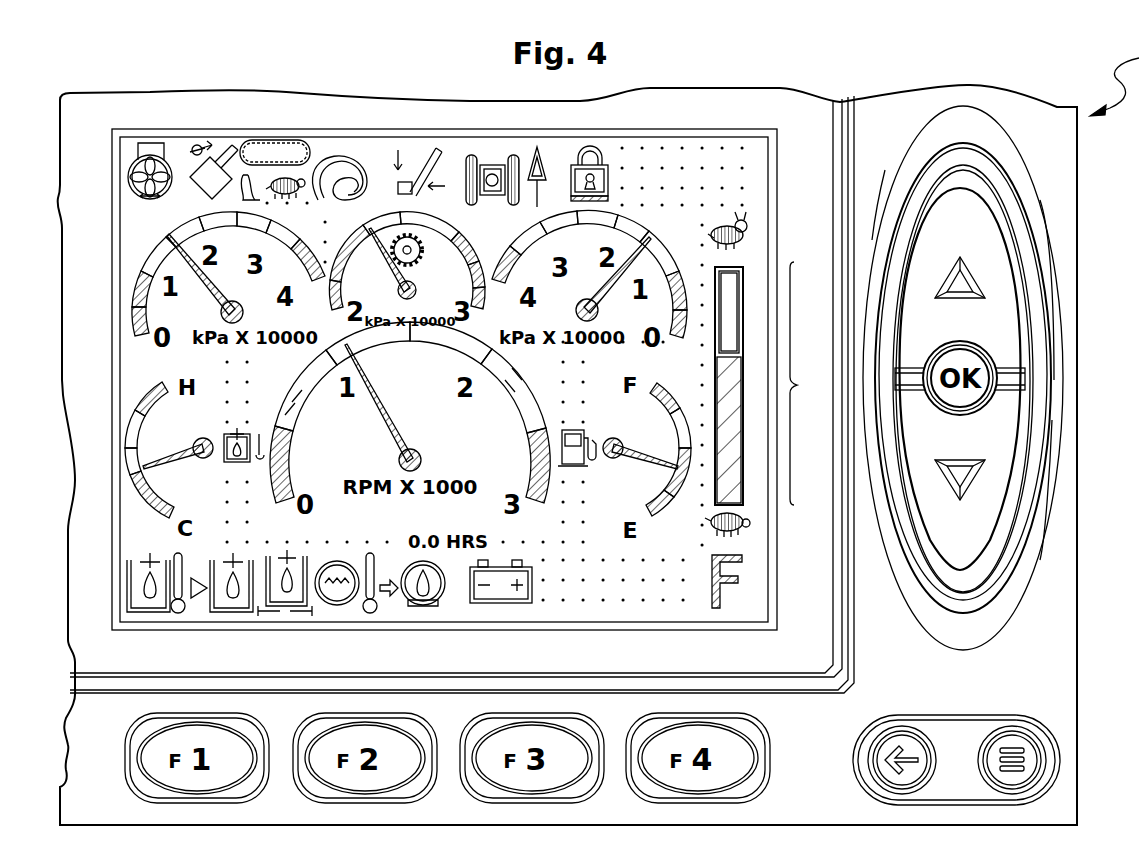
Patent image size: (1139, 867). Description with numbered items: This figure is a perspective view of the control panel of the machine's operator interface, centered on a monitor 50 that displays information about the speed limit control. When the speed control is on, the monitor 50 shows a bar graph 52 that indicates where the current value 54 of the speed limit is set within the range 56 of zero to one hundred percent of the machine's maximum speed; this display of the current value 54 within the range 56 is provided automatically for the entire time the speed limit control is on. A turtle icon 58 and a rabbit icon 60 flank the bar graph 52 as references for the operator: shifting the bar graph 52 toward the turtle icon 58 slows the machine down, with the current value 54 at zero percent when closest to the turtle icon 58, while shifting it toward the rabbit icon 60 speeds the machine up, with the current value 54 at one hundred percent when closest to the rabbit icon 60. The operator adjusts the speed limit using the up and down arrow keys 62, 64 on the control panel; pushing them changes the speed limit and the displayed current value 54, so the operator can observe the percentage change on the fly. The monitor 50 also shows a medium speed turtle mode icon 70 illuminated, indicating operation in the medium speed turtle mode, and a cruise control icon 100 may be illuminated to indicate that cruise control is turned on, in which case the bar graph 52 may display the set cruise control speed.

The monitor 50 is at (687, 613).
The bar graph 52 is at (699, 266).
The current value 54 is at (732, 330).
The range 56 is at (797, 385).
The turtle icon 58 is at (752, 528).
The rabbit icon 60 is at (750, 233).
The up arrow key 62 is at (973, 282).
The down arrow key 64 is at (980, 477).
The medium speed turtle mode icon 70 is at (313, 138).
The cruise control icon 100 is at (457, 138).